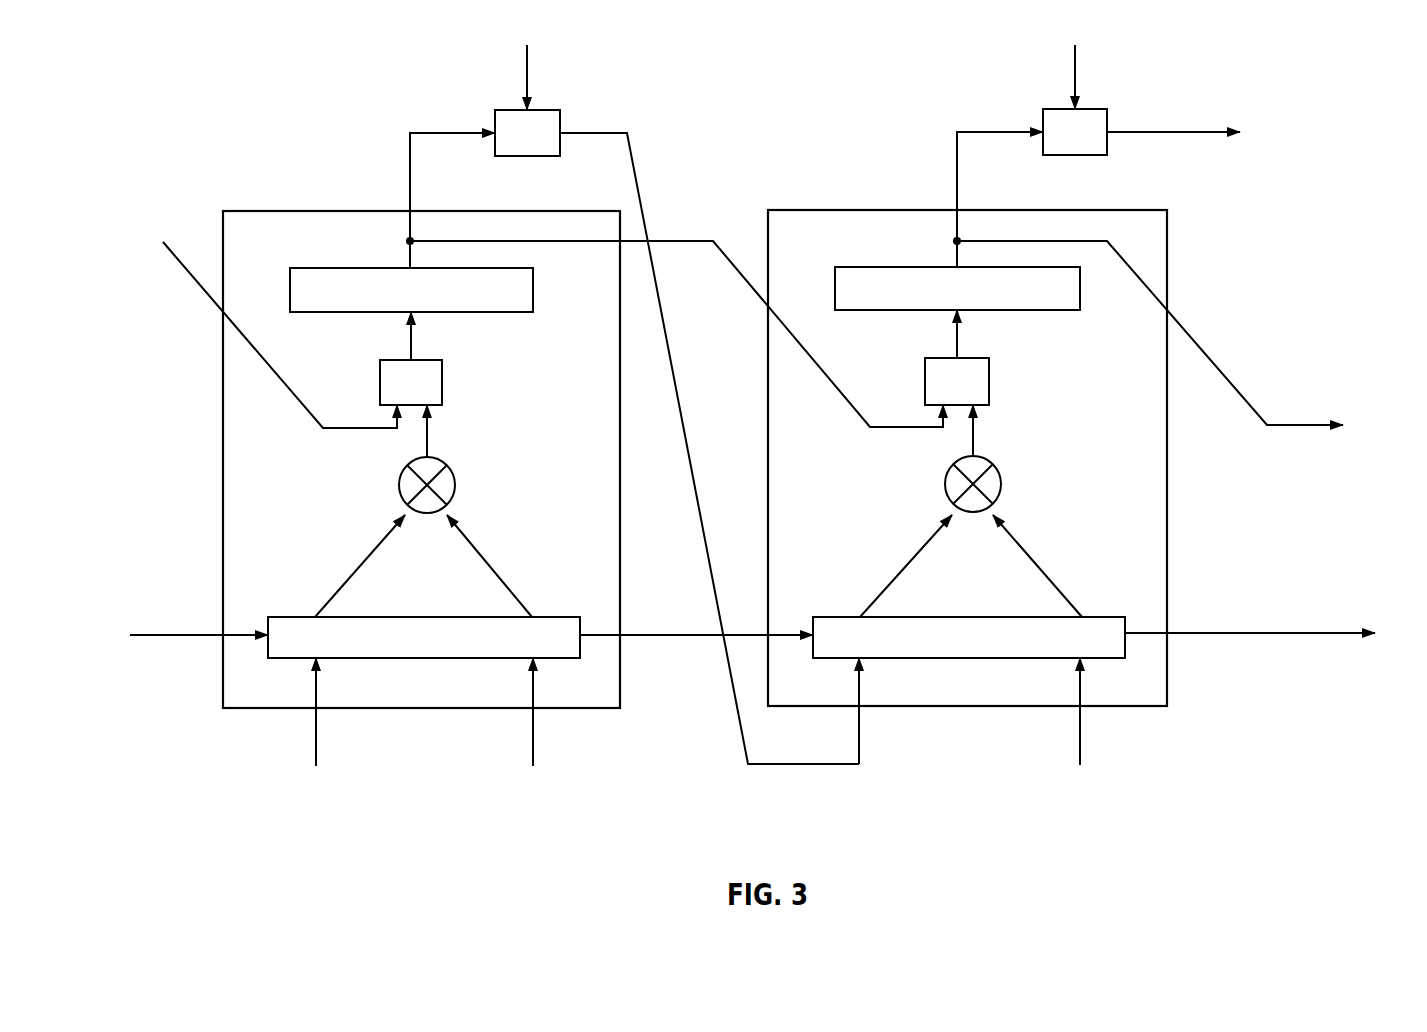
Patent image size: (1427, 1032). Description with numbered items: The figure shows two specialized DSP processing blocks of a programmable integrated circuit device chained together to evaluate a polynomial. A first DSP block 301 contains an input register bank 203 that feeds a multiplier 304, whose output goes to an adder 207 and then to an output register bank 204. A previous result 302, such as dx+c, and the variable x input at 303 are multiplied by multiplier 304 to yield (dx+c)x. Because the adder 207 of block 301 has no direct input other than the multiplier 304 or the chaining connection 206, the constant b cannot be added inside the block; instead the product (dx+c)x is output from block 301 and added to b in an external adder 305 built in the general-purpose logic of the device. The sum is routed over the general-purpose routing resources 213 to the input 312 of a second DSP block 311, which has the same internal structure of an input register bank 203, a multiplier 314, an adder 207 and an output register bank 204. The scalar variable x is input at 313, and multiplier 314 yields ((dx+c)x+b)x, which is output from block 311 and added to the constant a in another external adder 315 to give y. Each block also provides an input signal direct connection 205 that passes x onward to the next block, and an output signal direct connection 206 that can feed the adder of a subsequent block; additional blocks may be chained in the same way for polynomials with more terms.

The input register bank 203 is at (552, 616).
The output register bank 204 is at (357, 268).
The input signal direct connection 205 is at (180, 637).
The output signal direct connection 206 is at (190, 273).
The adder 207 is at (430, 359).
The programmable interconnect resources 213 is at (678, 378).
The first DSP block 301 is at (286, 211).
The previous result 302 is at (316, 738).
The variable x input 303 is at (533, 738).
The multiplier 304 is at (438, 457).
The external adder 305 is at (505, 110).
The second DSP block 311 is at (831, 210).
The input of (dx+c)x+b 312 is at (859, 720).
The variable x input 313 is at (1080, 722).
The multiplier 314 is at (986, 455).
The external adder 315 is at (1053, 109).